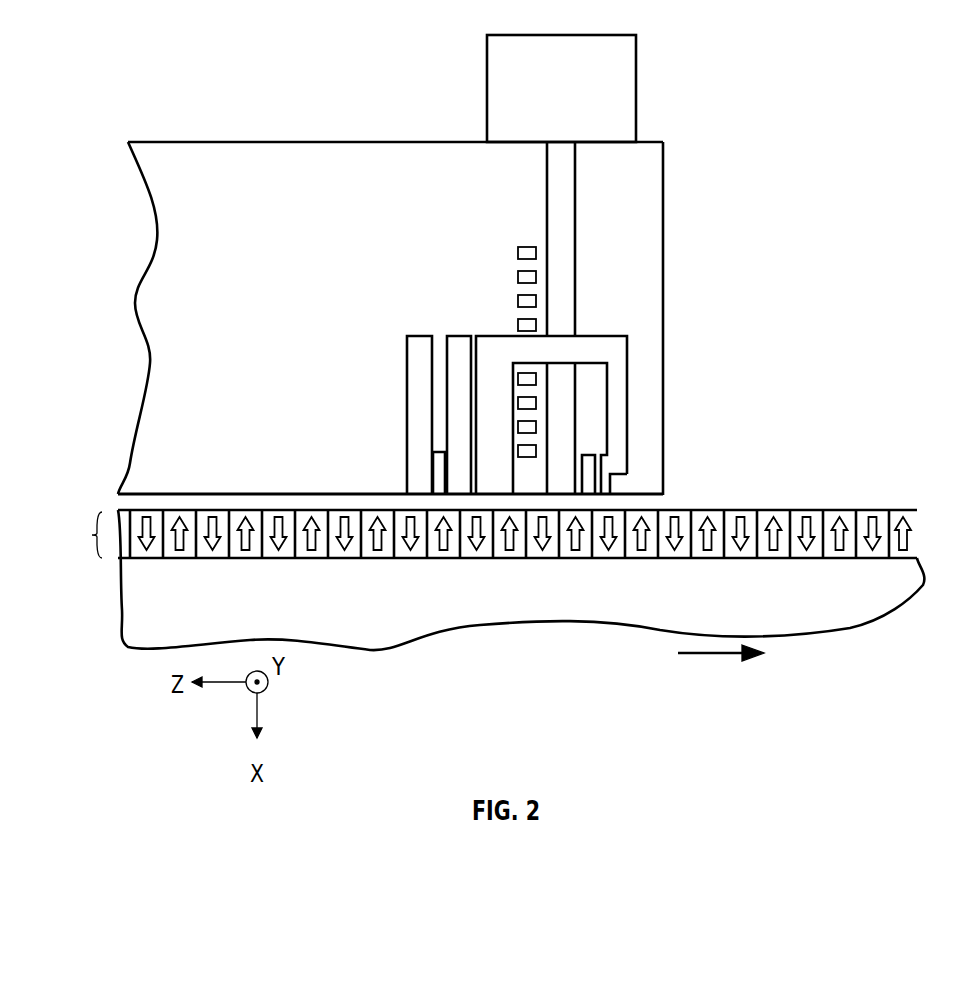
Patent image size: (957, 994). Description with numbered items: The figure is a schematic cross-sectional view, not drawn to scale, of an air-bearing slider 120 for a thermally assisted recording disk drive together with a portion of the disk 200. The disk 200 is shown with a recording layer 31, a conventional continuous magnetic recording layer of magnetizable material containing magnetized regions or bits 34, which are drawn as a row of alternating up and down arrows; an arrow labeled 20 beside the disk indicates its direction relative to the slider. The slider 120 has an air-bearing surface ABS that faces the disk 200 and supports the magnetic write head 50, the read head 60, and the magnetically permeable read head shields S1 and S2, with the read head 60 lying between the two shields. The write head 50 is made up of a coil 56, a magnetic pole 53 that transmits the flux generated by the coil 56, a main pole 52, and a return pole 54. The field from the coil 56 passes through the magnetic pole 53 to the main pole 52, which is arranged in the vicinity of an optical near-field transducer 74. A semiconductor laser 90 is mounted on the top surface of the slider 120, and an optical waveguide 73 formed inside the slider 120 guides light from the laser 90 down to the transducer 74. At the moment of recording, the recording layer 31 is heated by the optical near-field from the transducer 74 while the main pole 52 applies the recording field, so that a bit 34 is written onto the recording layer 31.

The direction of media motion 20 is at (710, 660).
The recording layer 31 is at (489, 534).
The bits 34 is at (875, 507).
The magnetic write head 50 is at (490, 274).
The main pole 52 is at (607, 487).
The magnetic pole 53 is at (617, 380).
The return pole 54 is at (495, 347).
The coil 56 is at (516, 252).
The read head 60 is at (432, 480).
The optical waveguide 73 is at (558, 282).
The optical near-field transducer 74 is at (588, 455).
The semiconductor laser 90 is at (622, 88).
The air-bearing slider 120 is at (160, 390).
The disk 200 is at (808, 618).
The read head shield S1 is at (410, 410).
The read head shield S2 is at (460, 331).
The air-bearing surface ABS is at (645, 496).